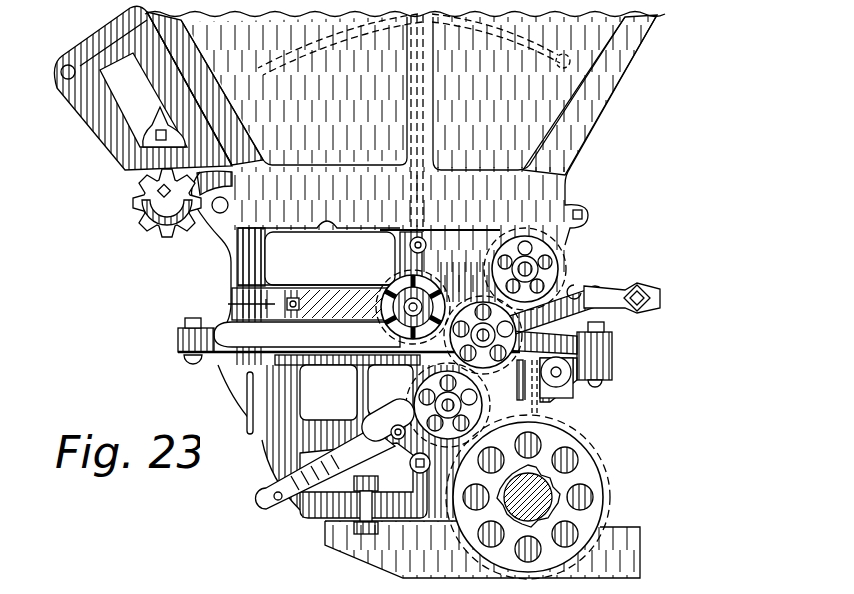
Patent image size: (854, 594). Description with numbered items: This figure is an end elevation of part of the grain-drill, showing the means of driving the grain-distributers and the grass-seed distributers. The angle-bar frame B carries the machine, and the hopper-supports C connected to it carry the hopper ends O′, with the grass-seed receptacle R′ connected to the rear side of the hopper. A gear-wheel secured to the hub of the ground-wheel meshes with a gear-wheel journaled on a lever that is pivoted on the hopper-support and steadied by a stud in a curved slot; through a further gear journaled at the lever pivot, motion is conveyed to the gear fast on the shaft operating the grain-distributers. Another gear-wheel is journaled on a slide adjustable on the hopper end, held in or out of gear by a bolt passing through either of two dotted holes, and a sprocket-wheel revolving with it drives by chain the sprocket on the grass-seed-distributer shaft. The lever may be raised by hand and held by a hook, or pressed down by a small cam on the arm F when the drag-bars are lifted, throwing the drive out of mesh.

The angle-bar frame B is at (350, 553).
The hopper-supports C is at (184, 363).
The arms F is at (660, 291).
The hopper ends O′ is at (405, 129).
The grass-seed receptacle R′ is at (107, 143).
The ratchet wheel k is at (143, 212).